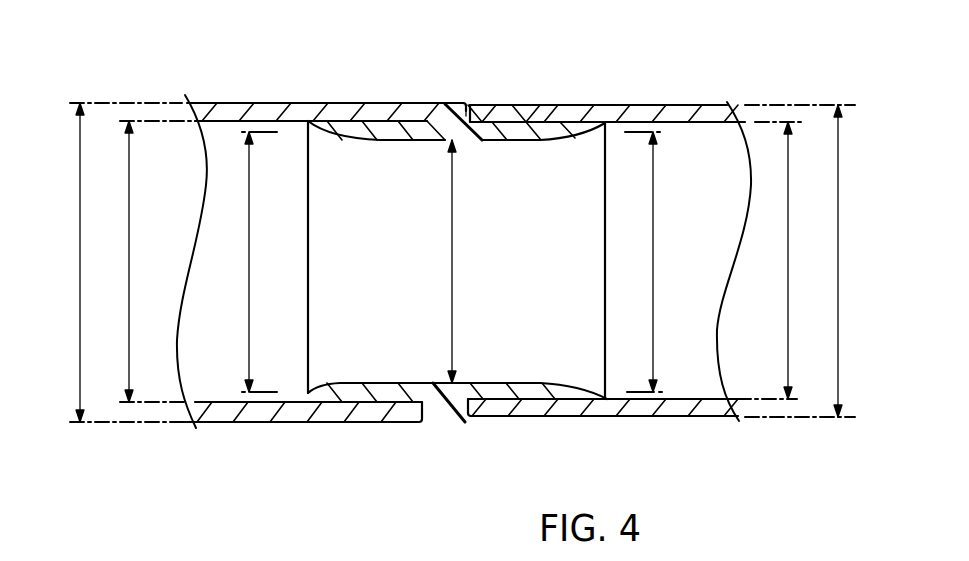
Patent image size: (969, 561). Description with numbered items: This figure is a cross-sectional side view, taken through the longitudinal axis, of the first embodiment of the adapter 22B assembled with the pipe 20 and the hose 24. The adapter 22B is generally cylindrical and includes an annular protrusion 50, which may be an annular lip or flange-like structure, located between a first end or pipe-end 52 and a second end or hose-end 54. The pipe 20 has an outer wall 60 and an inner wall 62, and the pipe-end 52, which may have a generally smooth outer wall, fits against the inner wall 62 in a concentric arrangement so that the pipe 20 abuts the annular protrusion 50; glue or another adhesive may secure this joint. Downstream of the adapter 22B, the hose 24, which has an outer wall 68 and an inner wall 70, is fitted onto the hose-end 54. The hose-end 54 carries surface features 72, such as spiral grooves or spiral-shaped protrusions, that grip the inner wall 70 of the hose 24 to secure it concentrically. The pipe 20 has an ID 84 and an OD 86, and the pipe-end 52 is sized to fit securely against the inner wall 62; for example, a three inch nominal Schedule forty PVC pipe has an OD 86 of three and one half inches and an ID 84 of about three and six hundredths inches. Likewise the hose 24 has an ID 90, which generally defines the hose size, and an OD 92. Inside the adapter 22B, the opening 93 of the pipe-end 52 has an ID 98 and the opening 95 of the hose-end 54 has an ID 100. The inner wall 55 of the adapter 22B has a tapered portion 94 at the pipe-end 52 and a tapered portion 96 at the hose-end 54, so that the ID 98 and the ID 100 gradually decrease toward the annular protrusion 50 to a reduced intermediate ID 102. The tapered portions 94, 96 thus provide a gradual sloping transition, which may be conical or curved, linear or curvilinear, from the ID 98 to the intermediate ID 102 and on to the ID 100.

The pipe 20 is at (193, 60).
The hose 24 is at (692, 60).
The adapter 22B is at (449, 429).
The annular protrusion 50 is at (437, 103).
The first end (pipe-end) 52 is at (369, 422).
The second end (hose-end) 54 is at (532, 400).
The inner wall 55 is at (483, 383).
The outer wall 60 is at (238, 103).
The inner wall 62 is at (208, 403).
The outer wall 68 is at (677, 417).
The inner wall 70 is at (683, 399).
The surface features 72 is at (537, 118).
The ID 84 is at (129, 262).
The OD 86 is at (80, 262).
The ID 90 is at (788, 262).
The OD 92 is at (838, 262).
The opening 93 is at (304, 128).
The tapered portion 94 is at (338, 143).
The opening 95 is at (611, 130).
The tapered portion 96 is at (580, 143).
The ID 98 is at (249, 260).
The ID 100 is at (653, 263).
The intermediate ID 102 is at (452, 262).